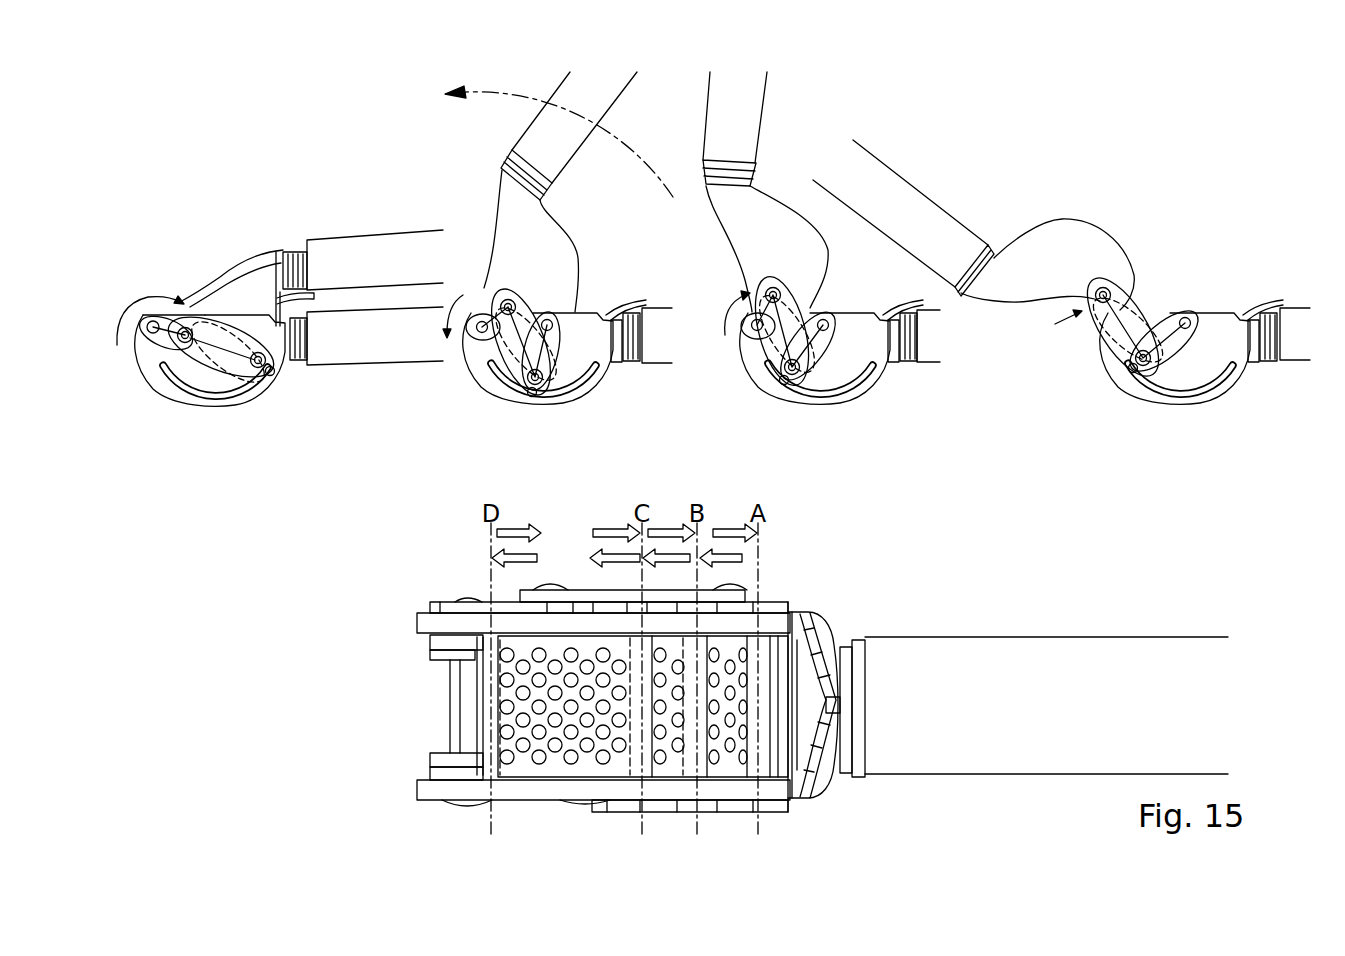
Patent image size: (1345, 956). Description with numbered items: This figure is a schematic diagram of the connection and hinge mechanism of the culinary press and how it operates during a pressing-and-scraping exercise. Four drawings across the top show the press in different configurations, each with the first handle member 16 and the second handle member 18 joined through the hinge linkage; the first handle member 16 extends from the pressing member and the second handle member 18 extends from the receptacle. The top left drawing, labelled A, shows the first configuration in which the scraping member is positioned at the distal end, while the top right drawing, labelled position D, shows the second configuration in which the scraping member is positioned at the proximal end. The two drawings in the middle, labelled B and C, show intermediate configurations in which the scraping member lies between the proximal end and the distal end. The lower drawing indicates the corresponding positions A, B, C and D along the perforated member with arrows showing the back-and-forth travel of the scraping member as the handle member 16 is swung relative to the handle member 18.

The first handle member 16 is at (378, 248).
The second handle member 18 is at (387, 347).
The position A is at (276, 383).
The position B is at (533, 395).
The position C is at (786, 390).
The position D is at (1135, 380).